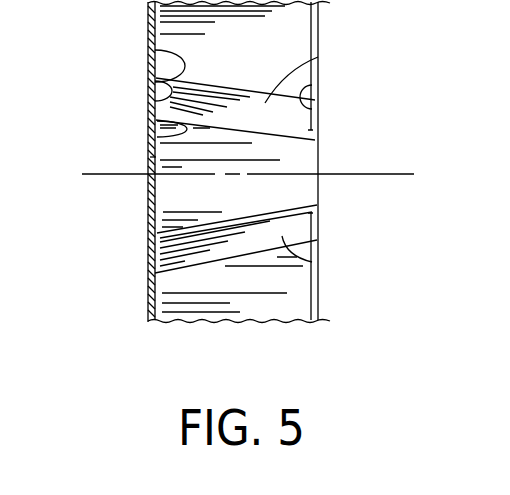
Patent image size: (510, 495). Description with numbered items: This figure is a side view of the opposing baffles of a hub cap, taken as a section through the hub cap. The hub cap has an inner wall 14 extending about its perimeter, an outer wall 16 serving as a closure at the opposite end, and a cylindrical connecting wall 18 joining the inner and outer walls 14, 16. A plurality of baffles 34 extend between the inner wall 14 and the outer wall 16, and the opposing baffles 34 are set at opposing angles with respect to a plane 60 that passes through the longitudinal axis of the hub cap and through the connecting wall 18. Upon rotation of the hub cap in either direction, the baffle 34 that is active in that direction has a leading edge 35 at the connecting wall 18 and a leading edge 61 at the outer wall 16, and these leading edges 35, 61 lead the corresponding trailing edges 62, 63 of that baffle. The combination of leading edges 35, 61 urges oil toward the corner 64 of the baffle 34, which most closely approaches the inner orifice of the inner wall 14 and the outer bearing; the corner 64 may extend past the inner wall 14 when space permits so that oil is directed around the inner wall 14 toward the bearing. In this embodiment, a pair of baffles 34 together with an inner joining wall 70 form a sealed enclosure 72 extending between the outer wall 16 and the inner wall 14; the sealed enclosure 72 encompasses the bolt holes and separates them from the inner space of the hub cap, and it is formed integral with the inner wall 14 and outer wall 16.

The inner wall 14 is at (318, 288).
The outer wall 16 is at (150, 297).
The connecting wall 18 is at (250, 300).
The baffle 34 is at (318, 57).
The leading edge 35 is at (155, 82).
The plane 60 is at (378, 174).
The leading edge 61 is at (155, 47).
The trailing edge 62 is at (313, 84).
The trailing edge 63 is at (152, 132).
The corner 64 is at (305, 137).
The inner joining wall 70 is at (172, 200).
The sealed enclosure 72 is at (150, 163).